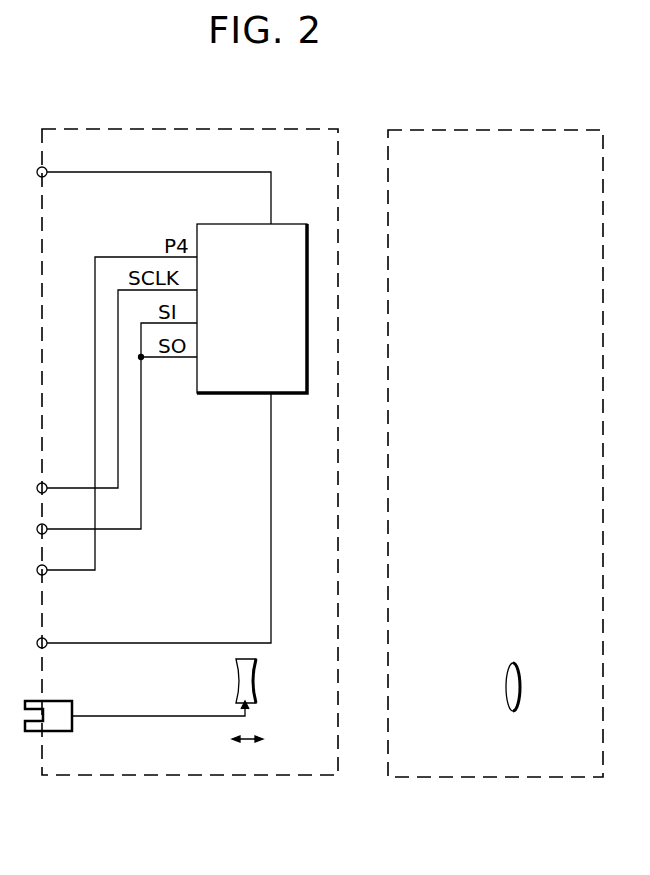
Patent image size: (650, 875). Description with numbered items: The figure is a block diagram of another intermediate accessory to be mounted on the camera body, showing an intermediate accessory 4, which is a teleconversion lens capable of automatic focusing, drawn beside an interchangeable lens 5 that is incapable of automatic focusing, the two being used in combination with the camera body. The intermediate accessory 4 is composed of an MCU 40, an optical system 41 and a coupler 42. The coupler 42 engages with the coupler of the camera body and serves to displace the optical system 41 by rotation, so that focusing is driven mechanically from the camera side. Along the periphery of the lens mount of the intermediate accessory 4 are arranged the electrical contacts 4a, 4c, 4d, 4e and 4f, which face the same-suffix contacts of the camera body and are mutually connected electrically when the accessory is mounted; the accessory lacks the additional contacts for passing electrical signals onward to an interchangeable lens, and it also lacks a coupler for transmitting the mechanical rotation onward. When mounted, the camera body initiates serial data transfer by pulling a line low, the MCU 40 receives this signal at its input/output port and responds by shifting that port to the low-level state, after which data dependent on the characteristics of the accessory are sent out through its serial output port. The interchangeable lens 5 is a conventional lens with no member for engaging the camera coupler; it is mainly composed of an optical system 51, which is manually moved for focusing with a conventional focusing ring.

The intermediate accessory 4 is at (194, 129).
The interchangeable lens 5 is at (457, 130).
The electrical contact 4a is at (147, 195).
The electrical contact 4c is at (111, 406).
The electrical contact 4d is at (111, 443).
The electrical contact 4e is at (111, 430).
The electrical contact 4f is at (148, 535).
The MCU 40 is at (199, 222).
The optical system 41 is at (249, 664).
The coupler 42 is at (51, 723).
The optical system 51 is at (519, 667).